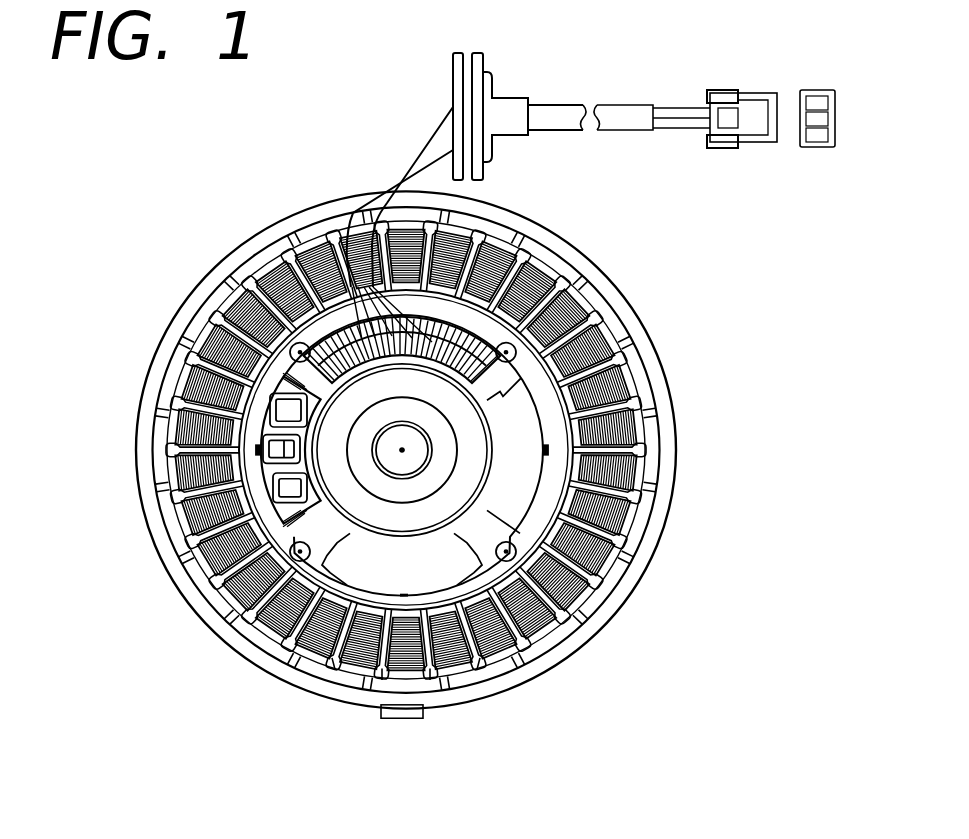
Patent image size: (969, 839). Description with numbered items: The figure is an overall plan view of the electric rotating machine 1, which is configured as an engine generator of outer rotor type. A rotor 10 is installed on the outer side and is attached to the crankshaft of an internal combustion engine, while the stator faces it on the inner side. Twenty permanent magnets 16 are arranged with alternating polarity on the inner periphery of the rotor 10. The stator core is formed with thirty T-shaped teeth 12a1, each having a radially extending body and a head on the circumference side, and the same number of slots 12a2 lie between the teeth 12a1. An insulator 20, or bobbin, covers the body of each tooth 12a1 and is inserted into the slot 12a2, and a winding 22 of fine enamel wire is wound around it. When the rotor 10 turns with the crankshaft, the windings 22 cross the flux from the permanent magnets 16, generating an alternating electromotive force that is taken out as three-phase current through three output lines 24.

The electric rotating machine 1 is at (630, 286).
The rotor 10 is at (656, 350).
The teeth 12a1 is at (406, 669).
The slots 12a2 is at (286, 636).
The permanent magnets 16 is at (606, 592).
The insulator 20 is at (450, 690).
The winding 22 is at (253, 264).
The output lines 24 is at (422, 146).